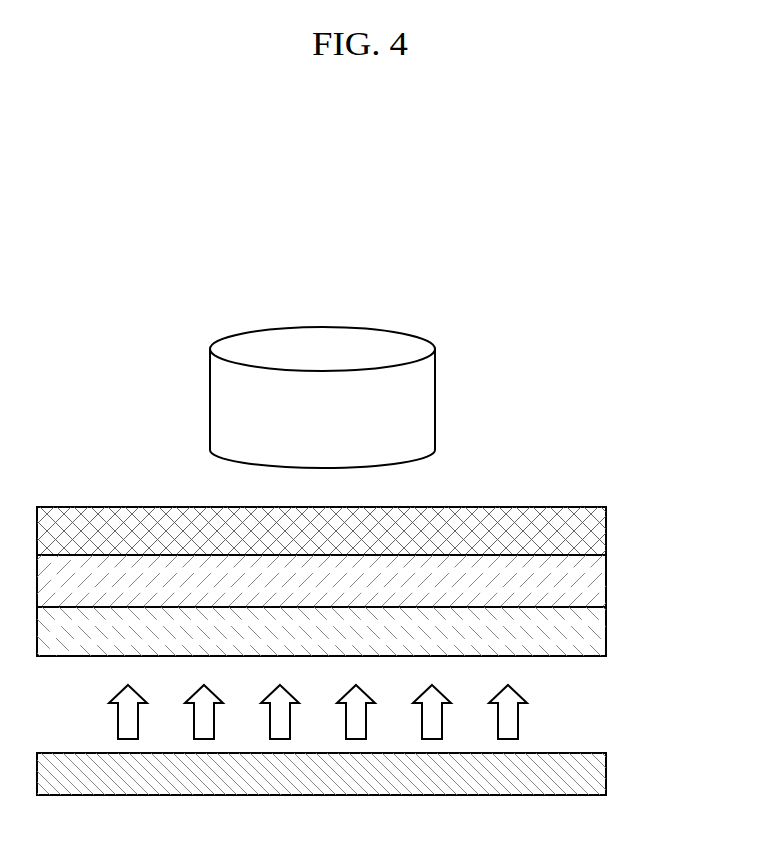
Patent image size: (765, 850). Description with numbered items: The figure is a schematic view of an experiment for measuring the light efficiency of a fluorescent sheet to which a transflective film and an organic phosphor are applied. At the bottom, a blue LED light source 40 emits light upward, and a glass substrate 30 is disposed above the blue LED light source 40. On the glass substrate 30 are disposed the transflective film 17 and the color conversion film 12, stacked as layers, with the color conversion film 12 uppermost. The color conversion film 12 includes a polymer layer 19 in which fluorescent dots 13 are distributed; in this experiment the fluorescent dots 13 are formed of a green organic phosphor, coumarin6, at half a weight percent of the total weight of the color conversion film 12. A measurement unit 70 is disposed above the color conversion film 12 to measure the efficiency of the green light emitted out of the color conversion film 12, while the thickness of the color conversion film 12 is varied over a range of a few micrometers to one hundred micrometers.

The measurement unit 70 is at (420, 402).
The color conversion film 12 is at (597, 529).
The fluorescent dots 13 is at (671, 499).
The polymer layer 19 is at (671, 499).
The transflective film 17 is at (597, 580).
The glass substrate 30 is at (597, 632).
The blue LED light source 40 is at (595, 775).